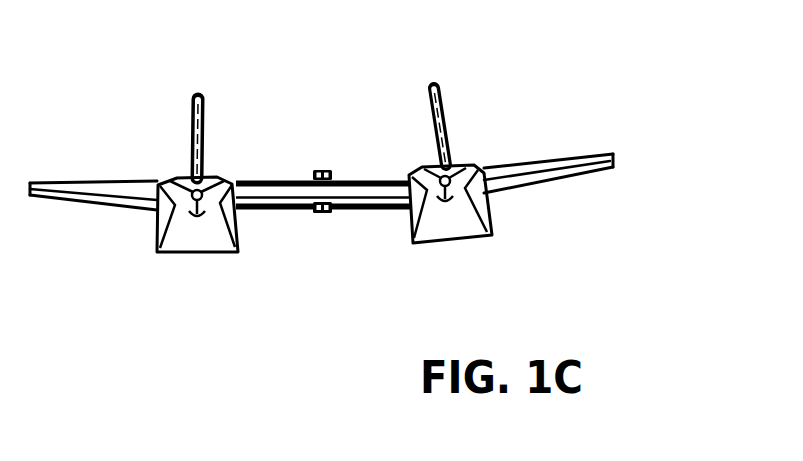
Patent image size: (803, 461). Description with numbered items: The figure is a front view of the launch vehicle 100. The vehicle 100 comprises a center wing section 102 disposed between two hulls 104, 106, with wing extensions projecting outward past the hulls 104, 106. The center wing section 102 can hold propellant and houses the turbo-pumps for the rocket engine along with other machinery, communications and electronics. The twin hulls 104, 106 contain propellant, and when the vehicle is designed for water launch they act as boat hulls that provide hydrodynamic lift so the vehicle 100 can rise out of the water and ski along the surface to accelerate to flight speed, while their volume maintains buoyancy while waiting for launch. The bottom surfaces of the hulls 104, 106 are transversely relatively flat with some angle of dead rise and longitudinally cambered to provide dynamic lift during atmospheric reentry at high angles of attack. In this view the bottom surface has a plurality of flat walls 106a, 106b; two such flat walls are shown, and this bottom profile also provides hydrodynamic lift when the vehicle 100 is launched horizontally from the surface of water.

The vehicle 100 is at (578, 67).
The center wing section 102 is at (375, 177).
The hull 104 is at (185, 255).
The hull 106 is at (452, 243).
The flat wall 106a is at (425, 243).
The flat wall 106b is at (470, 243).